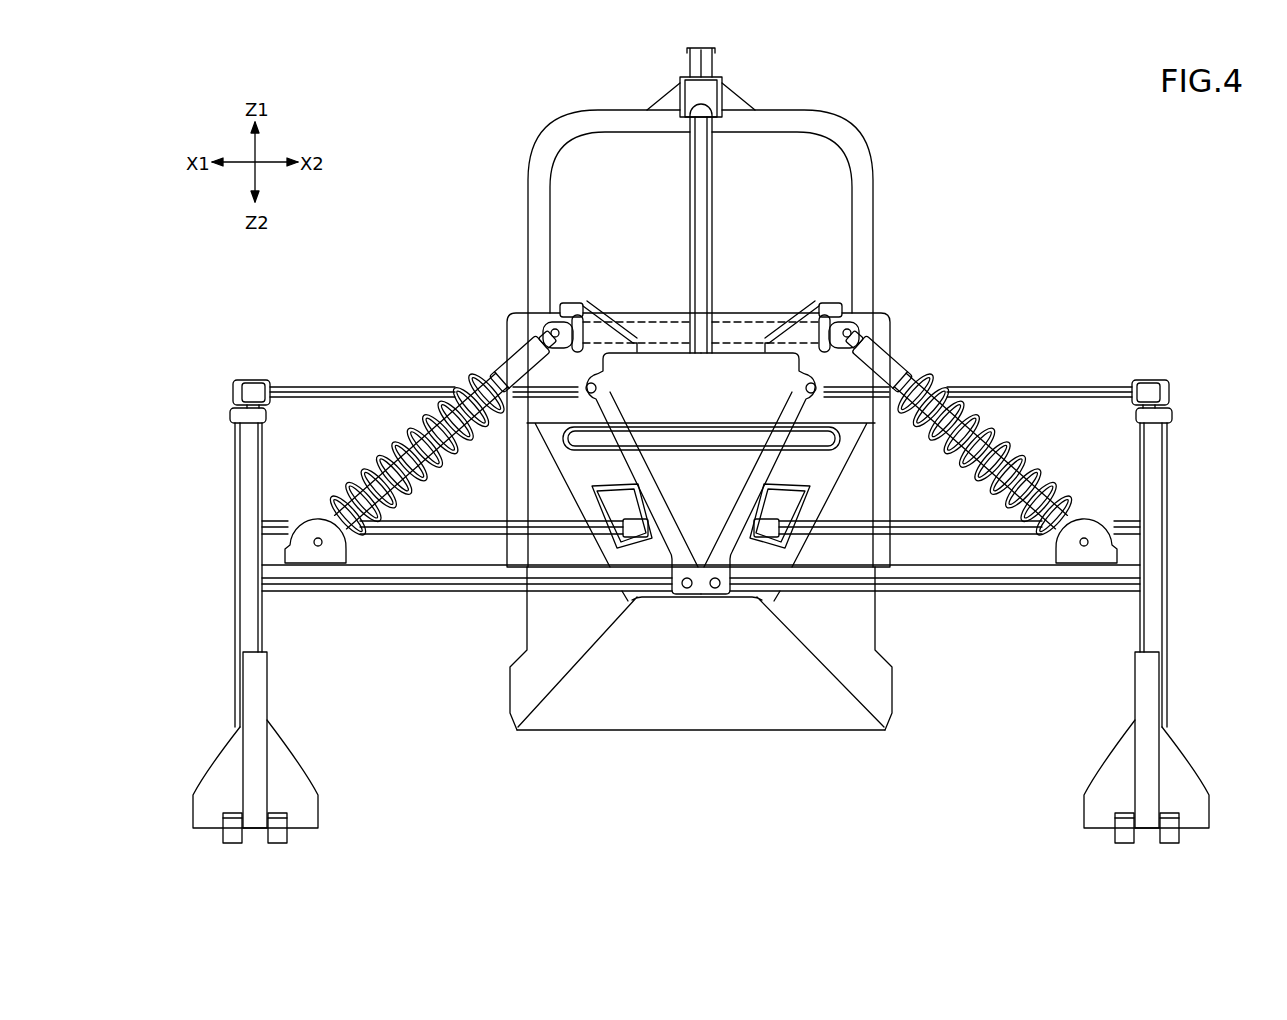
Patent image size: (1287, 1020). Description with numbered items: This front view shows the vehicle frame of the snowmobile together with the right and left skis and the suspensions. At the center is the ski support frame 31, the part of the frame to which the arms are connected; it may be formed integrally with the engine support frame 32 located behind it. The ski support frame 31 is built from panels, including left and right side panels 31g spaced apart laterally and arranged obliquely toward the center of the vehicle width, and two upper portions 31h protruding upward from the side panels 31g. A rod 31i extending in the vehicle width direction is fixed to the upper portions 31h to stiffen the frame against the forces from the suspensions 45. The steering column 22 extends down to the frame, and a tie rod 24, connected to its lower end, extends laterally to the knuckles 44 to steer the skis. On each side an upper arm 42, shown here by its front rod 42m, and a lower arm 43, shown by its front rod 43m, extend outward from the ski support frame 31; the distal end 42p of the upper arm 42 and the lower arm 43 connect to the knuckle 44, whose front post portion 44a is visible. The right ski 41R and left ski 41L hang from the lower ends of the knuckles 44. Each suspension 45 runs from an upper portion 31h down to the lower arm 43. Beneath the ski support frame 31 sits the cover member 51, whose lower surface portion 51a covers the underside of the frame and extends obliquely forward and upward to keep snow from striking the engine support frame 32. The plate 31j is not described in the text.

The steering column 22 is at (714, 73).
The tie rod 24 is at (466, 518).
The ski support frame 31 is at (834, 302).
The side panel 31g is at (575, 470).
The upper portion 31h is at (577, 305).
The rod 31i is at (646, 331).
The triangular plate 31j is at (735, 360).
The engine support frame 32 is at (867, 638).
The right ski 41R is at (207, 780).
The left ski 41L is at (1193, 780).
The upper arm 42 is at (703, 355).
The front rod 42m is at (310, 385).
The distal end 42p is at (249, 387).
The lower arm 43 is at (701, 623).
The front rod 43m is at (430, 574).
The knuckle 44 is at (698, 567).
The front post portion 44a is at (237, 553).
The suspension 45 is at (481, 356).
The cover member 51 is at (701, 709).
The lower surface portion 51a is at (698, 723).